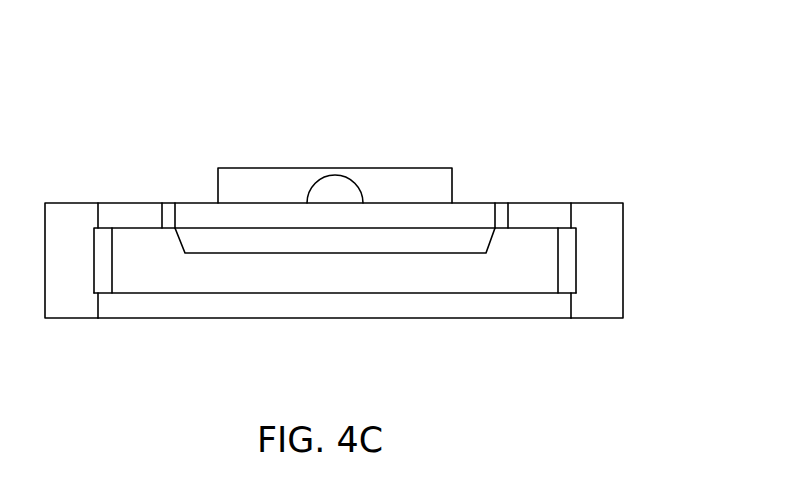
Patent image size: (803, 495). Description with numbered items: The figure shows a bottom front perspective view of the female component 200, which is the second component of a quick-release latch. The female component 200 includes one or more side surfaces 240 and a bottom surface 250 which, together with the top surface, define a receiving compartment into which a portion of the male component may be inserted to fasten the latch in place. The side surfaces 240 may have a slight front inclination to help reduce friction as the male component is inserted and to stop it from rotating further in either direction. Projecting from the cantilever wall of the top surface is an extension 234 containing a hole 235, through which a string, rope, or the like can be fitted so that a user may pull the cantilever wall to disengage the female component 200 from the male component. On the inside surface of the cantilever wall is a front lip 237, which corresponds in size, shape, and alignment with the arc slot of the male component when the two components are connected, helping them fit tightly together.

The female component 200 is at (143, 108).
The extension 234 is at (400, 187).
The hole 235 is at (330, 192).
The front lip 237 is at (456, 237).
The side surface 240 is at (607, 252).
The bottom surface 250 is at (447, 303).